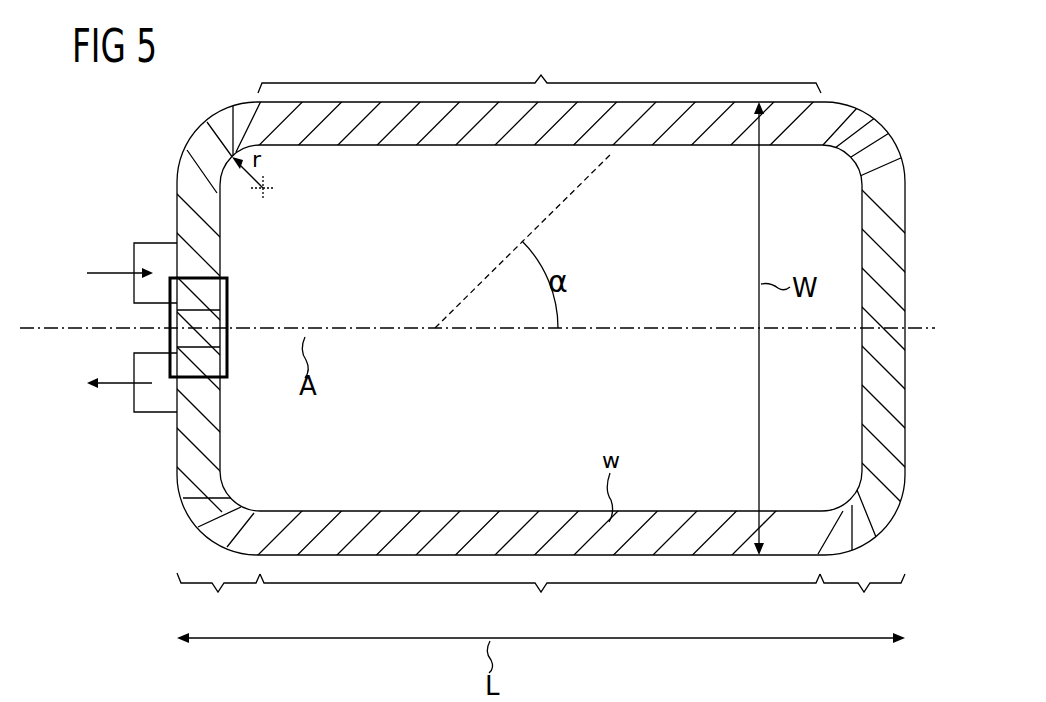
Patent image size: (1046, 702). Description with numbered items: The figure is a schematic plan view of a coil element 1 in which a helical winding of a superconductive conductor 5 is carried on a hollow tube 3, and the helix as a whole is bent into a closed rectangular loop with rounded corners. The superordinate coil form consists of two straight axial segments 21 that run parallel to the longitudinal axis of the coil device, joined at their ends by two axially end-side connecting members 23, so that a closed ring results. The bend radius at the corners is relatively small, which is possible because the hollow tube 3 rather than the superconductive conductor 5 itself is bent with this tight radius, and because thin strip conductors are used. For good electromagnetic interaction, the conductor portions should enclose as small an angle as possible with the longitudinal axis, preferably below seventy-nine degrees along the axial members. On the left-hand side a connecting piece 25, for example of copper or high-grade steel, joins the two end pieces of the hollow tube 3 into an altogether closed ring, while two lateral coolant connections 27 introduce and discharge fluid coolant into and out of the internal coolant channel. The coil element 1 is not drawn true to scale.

The coil element 1 is at (226, 66).
The hollow tube 3 is at (556, 522).
The superconductive conductor 5 is at (188, 441).
The straight axial segments 21 is at (539, 336).
The axially end-side connecting members 23 is at (541, 600).
The connecting piece 25 is at (229, 296).
The lateral coolant connections 27 is at (145, 291).